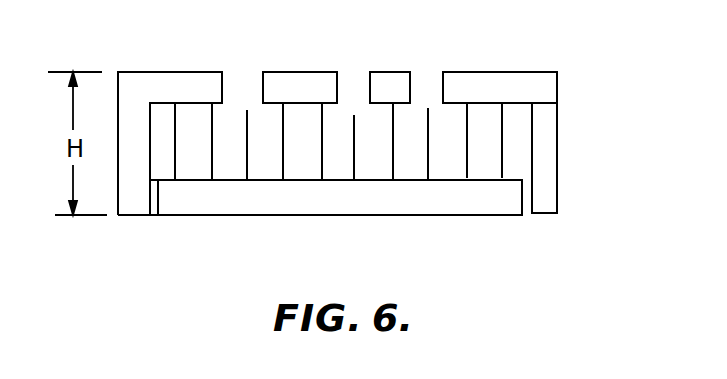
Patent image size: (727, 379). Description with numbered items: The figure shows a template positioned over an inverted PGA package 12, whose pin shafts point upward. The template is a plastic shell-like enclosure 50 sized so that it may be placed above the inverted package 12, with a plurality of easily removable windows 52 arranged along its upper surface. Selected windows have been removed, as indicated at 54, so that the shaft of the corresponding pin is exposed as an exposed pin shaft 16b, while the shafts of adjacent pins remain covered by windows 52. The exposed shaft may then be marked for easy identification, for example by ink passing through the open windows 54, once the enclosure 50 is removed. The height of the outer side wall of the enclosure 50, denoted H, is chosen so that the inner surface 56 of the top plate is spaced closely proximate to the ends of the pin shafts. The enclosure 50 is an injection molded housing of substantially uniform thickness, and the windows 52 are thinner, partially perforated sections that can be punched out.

The PGA package 12 is at (280, 207).
The exposed pin shaft 16b is at (468, 136).
The enclosure 50 is at (555, 90).
The windows 52 is at (165, 72).
The open windows 54 is at (243, 74).
The inner surface 56 is at (517, 103).